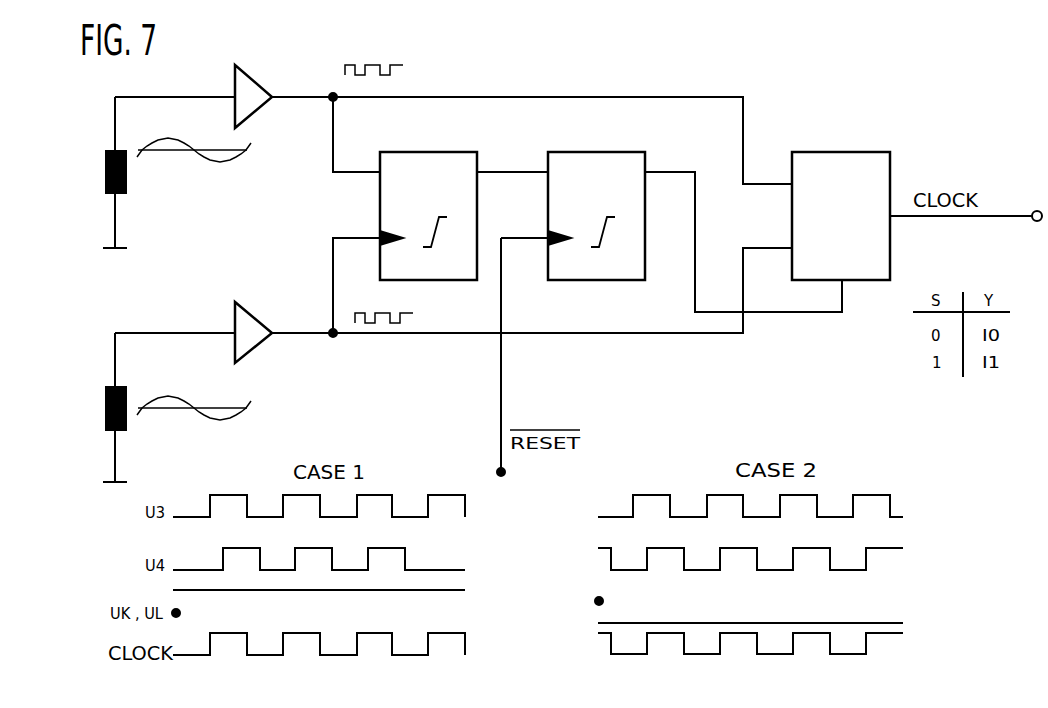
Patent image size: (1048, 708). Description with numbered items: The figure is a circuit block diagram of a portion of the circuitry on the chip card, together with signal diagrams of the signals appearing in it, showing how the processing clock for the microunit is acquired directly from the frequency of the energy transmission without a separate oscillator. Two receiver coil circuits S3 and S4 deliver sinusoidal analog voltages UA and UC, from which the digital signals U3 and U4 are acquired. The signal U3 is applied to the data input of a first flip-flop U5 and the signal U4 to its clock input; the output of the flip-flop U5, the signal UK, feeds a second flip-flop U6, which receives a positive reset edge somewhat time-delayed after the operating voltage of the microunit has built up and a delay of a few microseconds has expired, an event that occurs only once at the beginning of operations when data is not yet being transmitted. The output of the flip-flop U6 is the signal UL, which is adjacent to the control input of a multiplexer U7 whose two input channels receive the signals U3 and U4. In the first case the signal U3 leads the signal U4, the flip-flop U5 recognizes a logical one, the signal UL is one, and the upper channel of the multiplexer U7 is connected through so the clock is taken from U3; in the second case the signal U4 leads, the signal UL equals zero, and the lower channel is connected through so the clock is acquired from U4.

The first sensor S3 is at (159, 172).
The second sensor S4 is at (159, 407).
The first sensor signal UA is at (175, 85).
The second sensor signal UC is at (175, 321).
The signal U3 is at (532, 124).
The signal U4 is at (532, 287).
The flip-flop U5 is at (435, 197).
The flip-flop U6 is at (615, 197).
The multiplexer U7 is at (865, 198).
The first flip-flop output signal UK is at (512, 186).
The signal UL is at (743, 242).